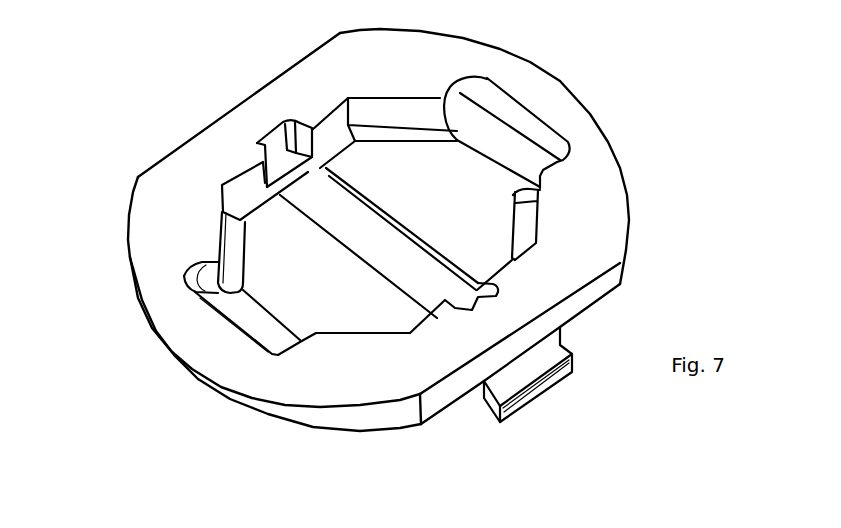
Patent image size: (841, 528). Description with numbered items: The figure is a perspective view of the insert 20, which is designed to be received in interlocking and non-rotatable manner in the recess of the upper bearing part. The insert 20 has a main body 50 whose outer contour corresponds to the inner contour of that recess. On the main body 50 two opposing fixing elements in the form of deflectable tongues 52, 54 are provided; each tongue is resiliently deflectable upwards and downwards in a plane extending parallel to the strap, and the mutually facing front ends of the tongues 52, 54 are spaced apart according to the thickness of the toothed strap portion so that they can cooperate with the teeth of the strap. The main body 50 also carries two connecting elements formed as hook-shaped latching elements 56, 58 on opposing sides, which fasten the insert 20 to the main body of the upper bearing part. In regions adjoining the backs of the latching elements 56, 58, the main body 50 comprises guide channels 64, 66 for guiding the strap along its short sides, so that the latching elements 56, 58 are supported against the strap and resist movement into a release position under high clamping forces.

The insert 20 is at (113, 142).
The main body 50 is at (590, 200).
The deflectable tongue 52 is at (300, 287).
The deflectable tongue 54 is at (473, 238).
The latching element 56 is at (280, 170).
The latching element 58 is at (523, 383).
The guide channel 64 is at (272, 141).
The guide channel 66 is at (477, 291).